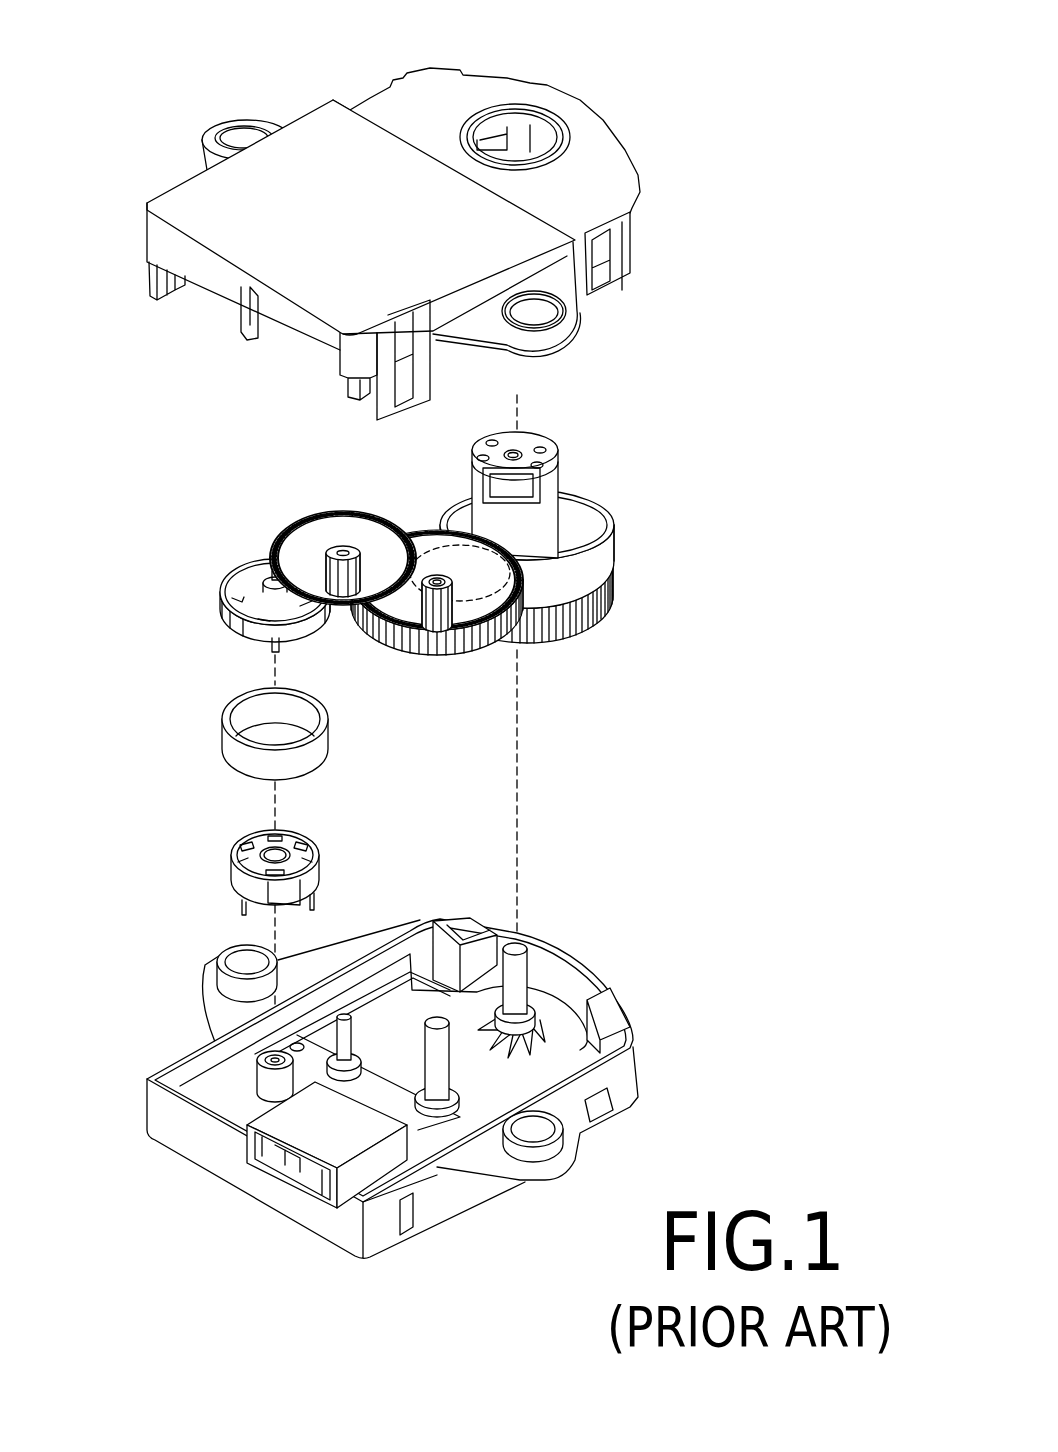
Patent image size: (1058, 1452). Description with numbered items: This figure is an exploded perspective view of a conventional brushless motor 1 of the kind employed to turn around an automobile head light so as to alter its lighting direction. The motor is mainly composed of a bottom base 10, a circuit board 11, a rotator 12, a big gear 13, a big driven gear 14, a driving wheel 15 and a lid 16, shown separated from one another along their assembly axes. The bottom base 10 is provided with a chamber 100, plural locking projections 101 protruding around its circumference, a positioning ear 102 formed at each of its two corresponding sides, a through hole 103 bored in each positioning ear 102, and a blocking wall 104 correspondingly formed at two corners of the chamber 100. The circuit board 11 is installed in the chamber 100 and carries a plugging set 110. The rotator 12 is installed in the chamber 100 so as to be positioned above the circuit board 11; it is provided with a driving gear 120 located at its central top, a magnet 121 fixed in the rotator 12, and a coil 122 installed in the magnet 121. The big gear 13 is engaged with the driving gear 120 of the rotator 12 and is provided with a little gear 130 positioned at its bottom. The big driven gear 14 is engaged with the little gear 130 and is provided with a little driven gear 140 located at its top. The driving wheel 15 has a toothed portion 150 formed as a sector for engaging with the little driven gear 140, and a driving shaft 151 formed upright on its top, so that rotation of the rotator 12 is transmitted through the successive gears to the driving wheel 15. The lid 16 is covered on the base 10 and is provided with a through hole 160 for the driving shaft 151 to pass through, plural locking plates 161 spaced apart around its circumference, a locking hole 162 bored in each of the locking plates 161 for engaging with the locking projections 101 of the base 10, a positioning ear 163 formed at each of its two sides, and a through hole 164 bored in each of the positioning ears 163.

The brushless motor 1 is at (171, 443).
The bottom base 10 is at (407, 1052).
The chamber 100 is at (410, 1017).
The locking projections 101 is at (603, 1107).
The positioning ear 102 is at (218, 1007).
The through hole 103 is at (240, 965).
The blocking wall 104 is at (447, 943).
The circuit board 11 is at (428, 1130).
The plugging set 110 is at (283, 1168).
The rotator 12 is at (236, 586).
The driving gear 120 is at (270, 577).
The magnet 121 is at (233, 748).
The coil 122 is at (233, 863).
The big gear 13 is at (336, 519).
The little gear 130 is at (322, 550).
The big driven gear 14 is at (436, 625).
The little driven gear 140 is at (427, 652).
The driving wheel 15 is at (553, 601).
The toothed portion 150 is at (566, 633).
The driving shaft 151 is at (522, 497).
The lid 16 is at (438, 210).
The through hole 160 is at (540, 140).
The locking plates 161 is at (637, 253).
The locking hole 162 is at (633, 285).
The positioning ear 163 is at (208, 150).
The through hole 164 is at (237, 147).